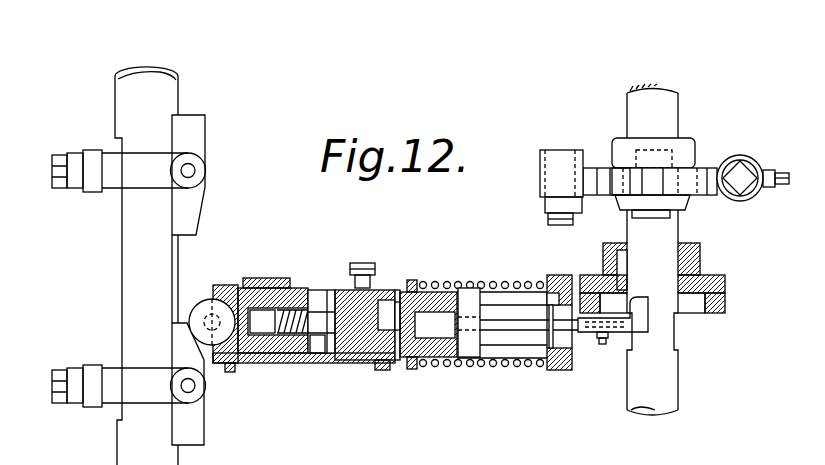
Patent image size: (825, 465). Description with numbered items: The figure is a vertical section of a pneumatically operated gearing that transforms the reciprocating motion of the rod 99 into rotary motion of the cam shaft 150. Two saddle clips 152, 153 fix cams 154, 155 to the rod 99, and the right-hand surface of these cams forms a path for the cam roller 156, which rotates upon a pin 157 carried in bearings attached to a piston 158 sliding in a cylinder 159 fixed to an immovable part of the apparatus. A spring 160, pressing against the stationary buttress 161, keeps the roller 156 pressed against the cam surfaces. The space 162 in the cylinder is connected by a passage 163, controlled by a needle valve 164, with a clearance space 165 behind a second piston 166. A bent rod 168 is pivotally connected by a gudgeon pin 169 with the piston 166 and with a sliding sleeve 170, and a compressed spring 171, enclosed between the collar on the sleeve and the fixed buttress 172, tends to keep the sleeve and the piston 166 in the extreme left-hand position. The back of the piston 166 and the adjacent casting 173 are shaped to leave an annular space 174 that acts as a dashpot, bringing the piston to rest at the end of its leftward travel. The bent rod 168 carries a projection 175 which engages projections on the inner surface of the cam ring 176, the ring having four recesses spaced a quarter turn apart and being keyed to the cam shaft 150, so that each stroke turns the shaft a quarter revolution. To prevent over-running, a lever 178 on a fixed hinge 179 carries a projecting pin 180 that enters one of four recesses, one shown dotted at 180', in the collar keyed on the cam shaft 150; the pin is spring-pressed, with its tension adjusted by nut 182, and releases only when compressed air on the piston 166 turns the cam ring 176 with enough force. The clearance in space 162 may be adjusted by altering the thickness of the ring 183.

The rod 99 is at (130, 283).
The cam shaft 150 is at (655, 112).
The saddle clip 152 is at (117, 176).
The saddle clip 153 is at (127, 390).
The cam 154 is at (190, 199).
The cam 155 is at (188, 413).
The cam roller 156 is at (203, 307).
The pin 157 is at (220, 320).
The piston 158 is at (265, 297).
The cylinder 159 is at (305, 300).
The spring 160 is at (268, 333).
The stationary buttress 161 is at (325, 285).
The space 162 is at (325, 340).
The passage 163 is at (380, 370).
The needle valve 164 is at (365, 267).
The clearance space 165 is at (400, 308).
The piston 166 is at (438, 340).
The bent rod 168 is at (578, 335).
The gudgeon pin 169 is at (468, 345).
The sliding sleeve 170 is at (438, 280).
The spring 171 is at (515, 280).
The fixed buttress 172 is at (555, 377).
The casting 173 is at (363, 348).
The annular space 174 is at (400, 283).
The projection 175 is at (638, 317).
The cam ring 176 is at (720, 308).
The lever 178 is at (735, 200).
The fixed hinge 179 is at (560, 170).
The projecting pin 180 is at (681, 144).
The recess 180' is at (668, 185).
The nut 182 is at (747, 158).
The ring 183 is at (270, 333).